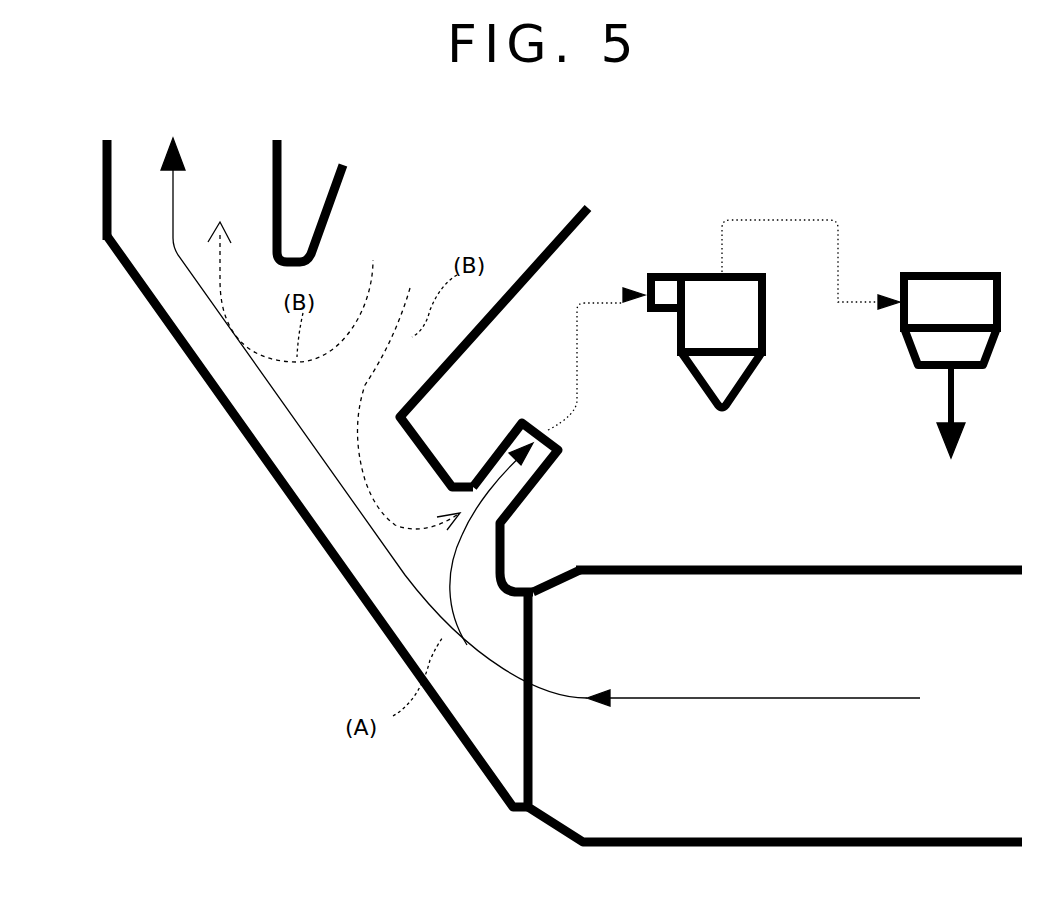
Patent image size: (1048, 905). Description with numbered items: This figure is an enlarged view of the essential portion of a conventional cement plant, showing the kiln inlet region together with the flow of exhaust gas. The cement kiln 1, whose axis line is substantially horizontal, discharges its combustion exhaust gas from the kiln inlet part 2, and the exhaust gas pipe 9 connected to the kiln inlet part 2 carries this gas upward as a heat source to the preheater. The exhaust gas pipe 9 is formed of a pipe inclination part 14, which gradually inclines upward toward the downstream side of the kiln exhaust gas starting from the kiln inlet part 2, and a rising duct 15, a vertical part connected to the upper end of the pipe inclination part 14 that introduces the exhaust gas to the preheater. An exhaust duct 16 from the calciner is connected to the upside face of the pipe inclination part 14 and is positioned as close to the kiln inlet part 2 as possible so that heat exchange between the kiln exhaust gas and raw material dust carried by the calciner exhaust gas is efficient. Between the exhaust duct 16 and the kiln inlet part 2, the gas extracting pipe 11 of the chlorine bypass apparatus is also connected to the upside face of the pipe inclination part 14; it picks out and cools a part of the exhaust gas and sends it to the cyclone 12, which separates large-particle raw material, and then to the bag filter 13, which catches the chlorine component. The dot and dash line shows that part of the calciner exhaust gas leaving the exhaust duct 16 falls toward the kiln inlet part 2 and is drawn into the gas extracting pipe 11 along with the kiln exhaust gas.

The cement kiln 1 is at (738, 567).
The kiln inlet part 2 is at (560, 573).
The exhaust gas pipe 9 is at (240, 580).
The gas extracting pipe 11 is at (562, 452).
The cyclone 12 is at (752, 322).
The bag filter 13 is at (950, 288).
The pipe inclination part 14 is at (252, 453).
The rising duct 15 is at (105, 178).
The exhaust duct 16 is at (580, 250).